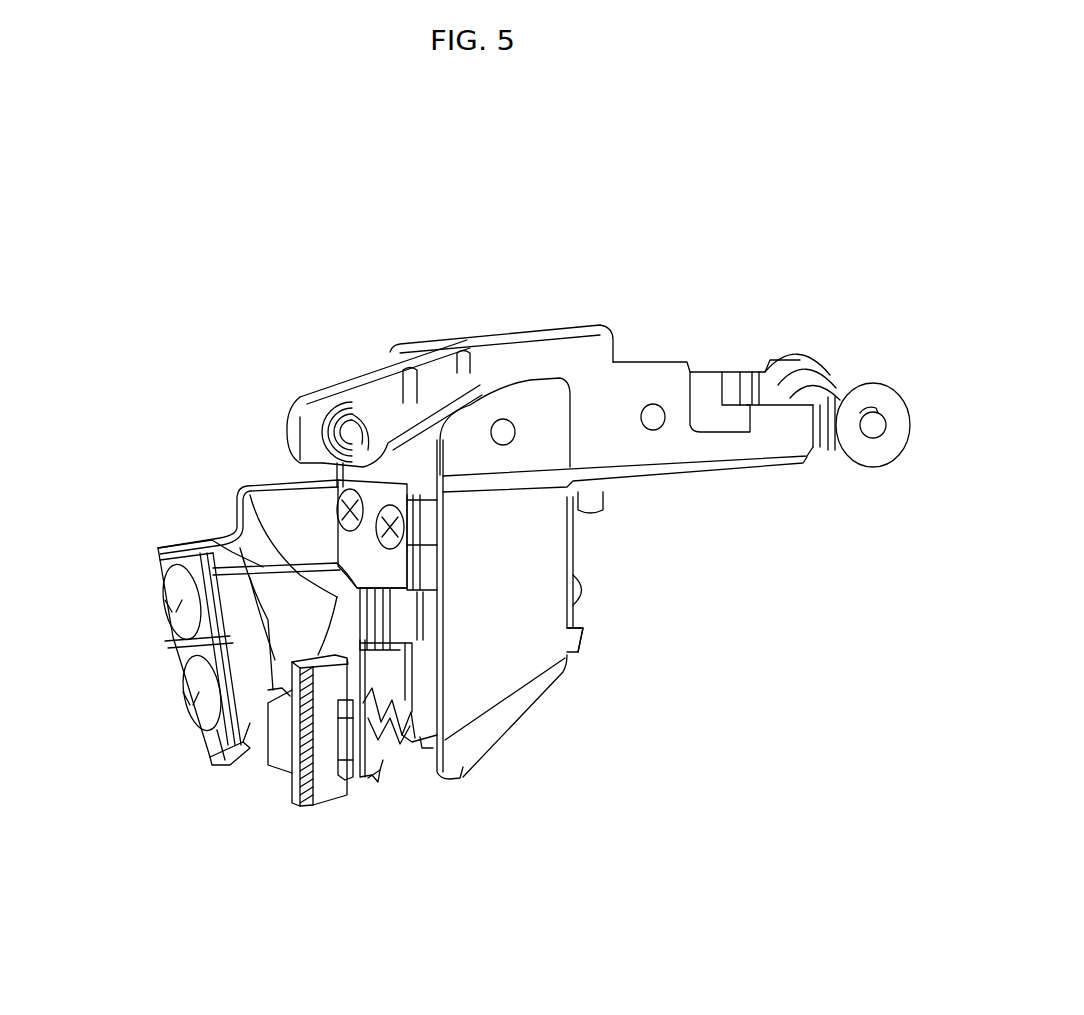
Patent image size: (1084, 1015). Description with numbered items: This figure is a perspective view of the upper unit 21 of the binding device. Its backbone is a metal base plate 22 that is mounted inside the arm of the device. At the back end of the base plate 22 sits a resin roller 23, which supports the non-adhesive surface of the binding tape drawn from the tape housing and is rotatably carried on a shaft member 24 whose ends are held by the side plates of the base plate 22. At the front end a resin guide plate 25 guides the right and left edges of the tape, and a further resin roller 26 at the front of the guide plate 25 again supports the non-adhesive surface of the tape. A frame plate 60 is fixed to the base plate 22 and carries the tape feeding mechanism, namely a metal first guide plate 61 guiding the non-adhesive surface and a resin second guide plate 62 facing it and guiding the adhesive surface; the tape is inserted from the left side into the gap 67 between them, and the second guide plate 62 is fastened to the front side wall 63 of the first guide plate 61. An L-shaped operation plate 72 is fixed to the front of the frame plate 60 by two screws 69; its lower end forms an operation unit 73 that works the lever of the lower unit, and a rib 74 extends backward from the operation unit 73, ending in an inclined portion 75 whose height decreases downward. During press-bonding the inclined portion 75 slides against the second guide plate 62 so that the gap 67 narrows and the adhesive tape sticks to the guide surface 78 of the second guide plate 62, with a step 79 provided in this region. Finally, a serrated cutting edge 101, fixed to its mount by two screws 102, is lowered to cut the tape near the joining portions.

The upper unit 21 is at (753, 205).
The base plate 22 is at (572, 348).
The resin roller 23 is at (833, 355).
The shaft member 24 is at (878, 418).
The guide plate 25 is at (370, 340).
The resin roller 26 is at (333, 360).
The screws 102 is at (386, 504).
The frame plate 60 is at (262, 512).
The first guide plate 61 is at (434, 752).
The second guide plate 62 is at (292, 822).
The front side wall 63 is at (340, 692).
The gap 67 is at (357, 778).
The screws 69 is at (165, 610).
The operation plate 72 is at (223, 637).
The operation unit 73 is at (235, 760).
The rib 74 is at (273, 603).
The inclined portion 75 is at (337, 598).
The guide surface 78 is at (378, 800).
The step 79 is at (346, 714).
The cutting edge 101 is at (392, 689).